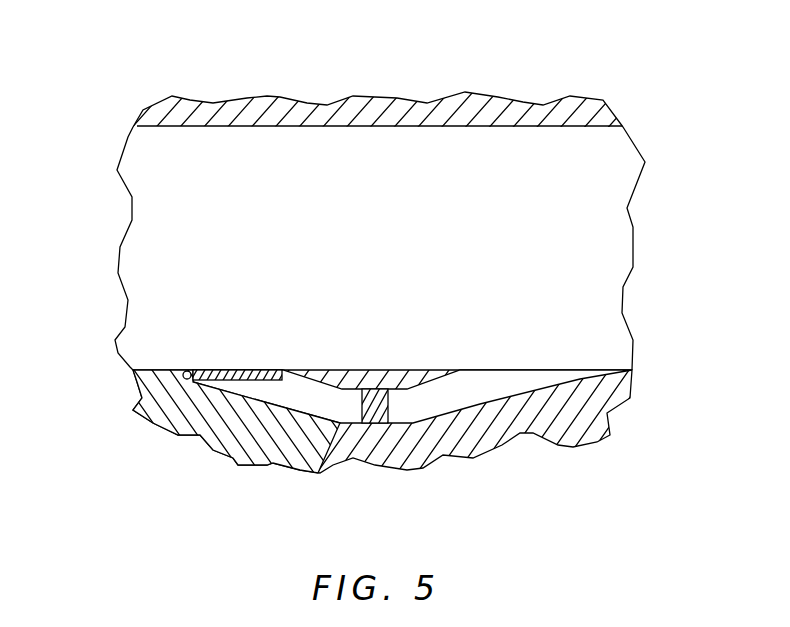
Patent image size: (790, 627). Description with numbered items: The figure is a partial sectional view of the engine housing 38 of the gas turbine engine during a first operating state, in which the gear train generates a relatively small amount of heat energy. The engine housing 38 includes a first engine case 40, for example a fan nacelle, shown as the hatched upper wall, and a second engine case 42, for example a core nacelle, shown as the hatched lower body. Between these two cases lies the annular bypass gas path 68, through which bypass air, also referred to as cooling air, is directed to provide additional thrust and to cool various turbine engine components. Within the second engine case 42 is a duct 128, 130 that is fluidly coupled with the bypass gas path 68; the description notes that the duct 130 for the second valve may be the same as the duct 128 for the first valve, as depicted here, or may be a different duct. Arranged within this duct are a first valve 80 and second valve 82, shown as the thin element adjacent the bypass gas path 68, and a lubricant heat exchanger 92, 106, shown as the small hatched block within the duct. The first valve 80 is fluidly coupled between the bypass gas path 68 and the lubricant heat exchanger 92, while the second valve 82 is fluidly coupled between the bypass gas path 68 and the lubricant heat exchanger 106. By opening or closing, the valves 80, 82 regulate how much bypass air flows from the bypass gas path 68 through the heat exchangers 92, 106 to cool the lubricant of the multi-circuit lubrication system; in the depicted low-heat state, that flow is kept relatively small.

The engine housing 38 is at (118, 90).
The first engine case 40 is at (440, 103).
The second engine case 42 is at (613, 399).
The bypass gas path 68 is at (382, 256).
The first valve 80 is at (234, 333).
The second valve 82 is at (223, 368).
The lubricant heat exchanger 92 is at (398, 456).
The lubricant heat exchanger 106 is at (390, 405).
The duct 128 is at (214, 443).
The duct 130 is at (292, 398).